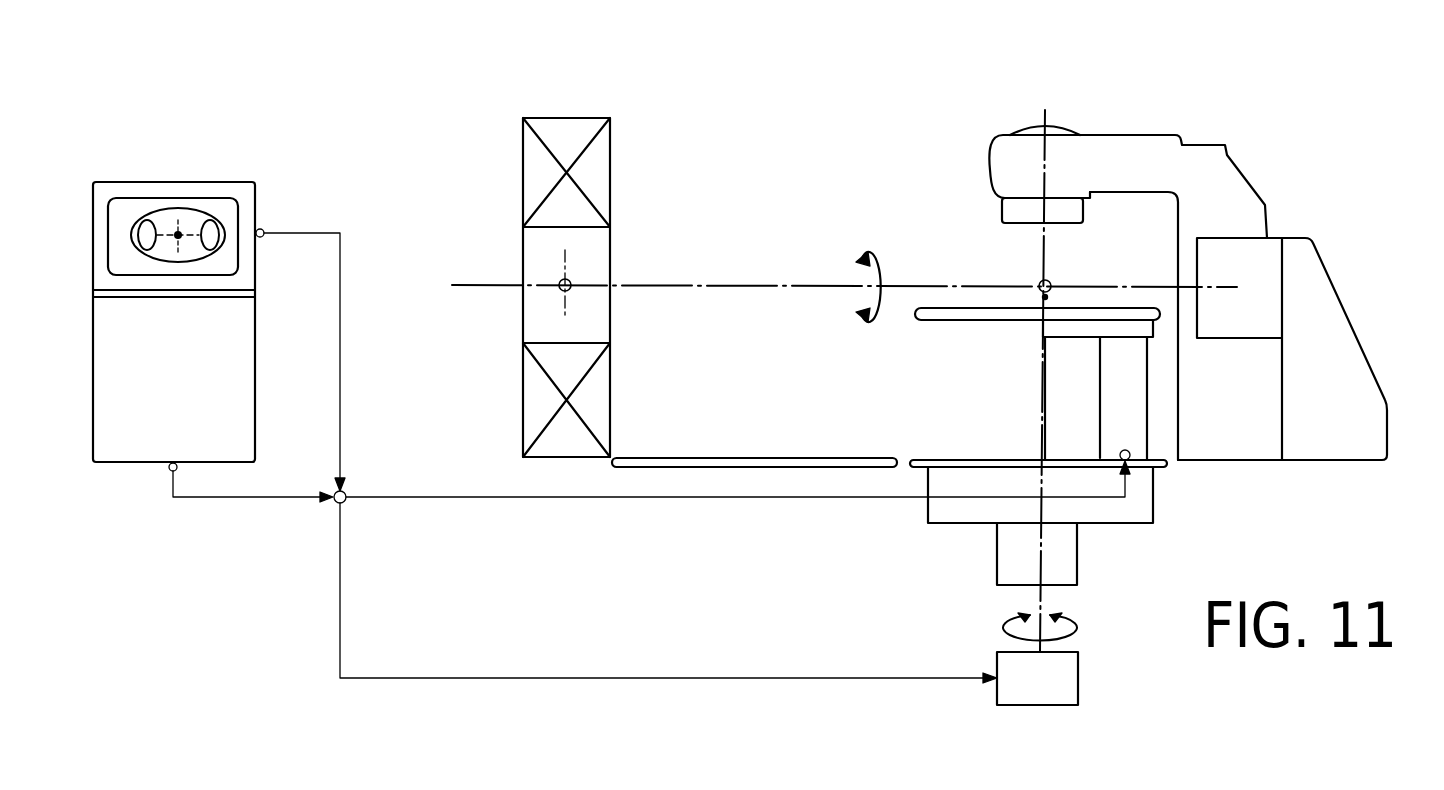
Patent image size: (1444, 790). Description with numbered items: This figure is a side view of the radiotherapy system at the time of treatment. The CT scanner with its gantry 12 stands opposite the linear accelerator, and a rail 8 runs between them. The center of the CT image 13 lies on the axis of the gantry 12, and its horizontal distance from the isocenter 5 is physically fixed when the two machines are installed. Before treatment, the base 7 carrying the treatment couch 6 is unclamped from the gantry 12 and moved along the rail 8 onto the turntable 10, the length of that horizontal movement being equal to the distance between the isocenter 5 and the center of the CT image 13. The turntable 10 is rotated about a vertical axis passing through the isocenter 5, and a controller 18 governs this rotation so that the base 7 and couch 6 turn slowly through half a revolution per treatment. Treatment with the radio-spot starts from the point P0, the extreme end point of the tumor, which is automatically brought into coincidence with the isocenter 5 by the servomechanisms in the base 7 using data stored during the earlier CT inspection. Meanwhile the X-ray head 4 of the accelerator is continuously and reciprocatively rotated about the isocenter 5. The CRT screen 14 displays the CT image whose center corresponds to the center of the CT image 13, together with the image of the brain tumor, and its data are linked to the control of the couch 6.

The X-ray head 4 is at (990, 151).
The isocenter 5 is at (1039, 285).
The starting point P0 is at (1049, 298).
The treatment couch 6 is at (968, 322).
The base 7 is at (1120, 403).
The rail 8 is at (707, 457).
The turntable 10 is at (975, 517).
The gantry 12 is at (611, 190).
The center of the CT image 13 is at (571, 283).
The CRT screen 14 is at (152, 206).
The controller 18 is at (1065, 690).